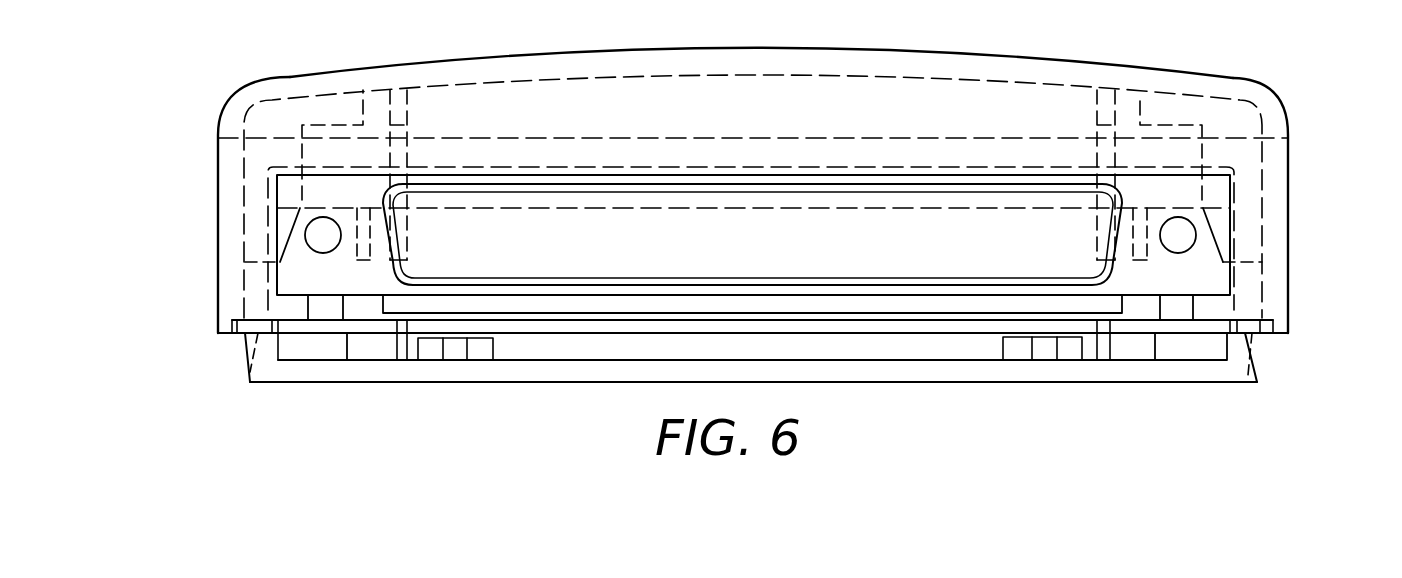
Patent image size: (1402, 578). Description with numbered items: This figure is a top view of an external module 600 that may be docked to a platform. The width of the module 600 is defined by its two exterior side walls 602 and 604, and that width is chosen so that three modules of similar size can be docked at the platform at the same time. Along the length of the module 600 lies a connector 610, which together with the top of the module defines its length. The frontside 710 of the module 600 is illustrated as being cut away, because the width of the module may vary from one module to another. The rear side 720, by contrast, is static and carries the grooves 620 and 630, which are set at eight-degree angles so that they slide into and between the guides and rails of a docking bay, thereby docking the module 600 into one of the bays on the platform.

The external module 600 is at (754, 166).
The exterior side wall 602 is at (218, 187).
The exterior side wall 604 is at (1289, 175).
The connector 610 is at (776, 252).
The groove 620 is at (1262, 353).
The groove 630 is at (247, 352).
The frontside 710 is at (602, 52).
The rear side 720 is at (488, 384).